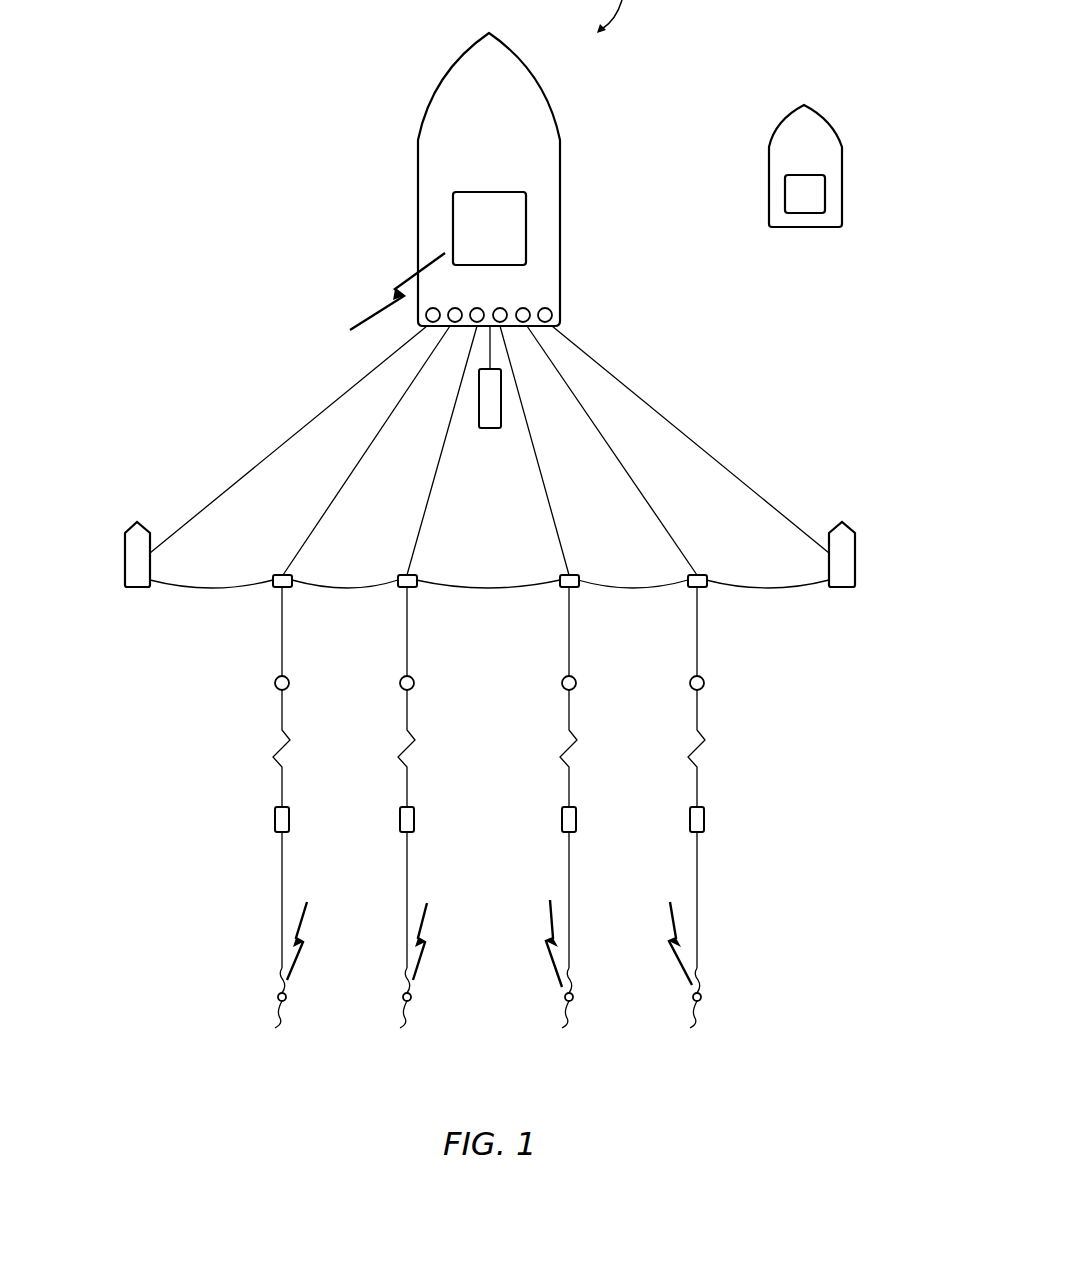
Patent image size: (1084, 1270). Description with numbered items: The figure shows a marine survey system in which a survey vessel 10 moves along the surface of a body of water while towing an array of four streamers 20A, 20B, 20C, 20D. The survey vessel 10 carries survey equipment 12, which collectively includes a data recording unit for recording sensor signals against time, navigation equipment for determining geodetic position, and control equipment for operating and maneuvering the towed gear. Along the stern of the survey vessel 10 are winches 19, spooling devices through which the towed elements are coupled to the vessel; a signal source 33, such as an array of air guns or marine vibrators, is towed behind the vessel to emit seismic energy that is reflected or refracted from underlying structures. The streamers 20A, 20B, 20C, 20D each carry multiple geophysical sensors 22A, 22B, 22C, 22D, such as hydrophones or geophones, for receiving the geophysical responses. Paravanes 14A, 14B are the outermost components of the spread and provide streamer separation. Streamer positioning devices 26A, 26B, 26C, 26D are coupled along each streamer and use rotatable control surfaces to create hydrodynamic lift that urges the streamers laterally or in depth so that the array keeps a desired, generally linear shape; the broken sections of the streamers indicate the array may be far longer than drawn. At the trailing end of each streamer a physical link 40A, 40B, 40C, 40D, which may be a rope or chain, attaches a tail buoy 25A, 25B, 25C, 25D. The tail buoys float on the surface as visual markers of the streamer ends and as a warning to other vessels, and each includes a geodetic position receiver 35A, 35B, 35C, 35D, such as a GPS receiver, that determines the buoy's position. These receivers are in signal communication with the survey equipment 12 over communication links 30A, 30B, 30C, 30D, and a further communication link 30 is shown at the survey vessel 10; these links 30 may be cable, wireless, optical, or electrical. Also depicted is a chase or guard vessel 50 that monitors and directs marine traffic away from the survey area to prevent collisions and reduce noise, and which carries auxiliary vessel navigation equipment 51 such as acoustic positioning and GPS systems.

The survey vessel 10 is at (501, 156).
The survey equipment 12 is at (501, 255).
The winch 19 is at (553, 319).
The communication link 30 is at (376, 304).
The signal source 33 is at (488, 429).
The paravane 14A is at (138, 588).
The paravane 14B is at (842, 588).
The streamer 20A is at (283, 645).
The streamer 20B is at (408, 645).
The streamer 20C is at (570, 645).
The streamer 20D is at (698, 645).
The geophysical sensors 22A is at (275, 683).
The geophysical sensors 22B is at (400, 683).
The geophysical sensors 22C is at (562, 683).
The geophysical sensors 22D is at (690, 683).
The streamer positioning device 26A is at (290, 819).
The streamer positioning device 26B is at (415, 819).
The streamer positioning device 26C is at (577, 819).
The streamer positioning device 26D is at (705, 819).
The communication link 30A is at (305, 916).
The communication link 30B is at (426, 907).
The communication link 30C is at (552, 914).
The communication link 30D is at (672, 914).
The physical link 40A is at (280, 976).
The physical link 40B is at (405, 976).
The physical link 40C is at (572, 976).
The physical link 40D is at (700, 976).
The geodetic position receiver 35A is at (287, 997).
The geodetic position receiver 35B is at (412, 997).
The geodetic position receiver 35C is at (574, 997).
The geodetic position receiver 35D is at (702, 997).
The tail buoy 25A is at (282, 1028).
The tail buoy 25B is at (410, 1028).
The tail buoy 25C is at (573, 1028).
The tail buoy 25D is at (701, 1028).
The vessel 50 is at (804, 228).
The auxiliary vessel navigation equipment 51 is at (818, 192).